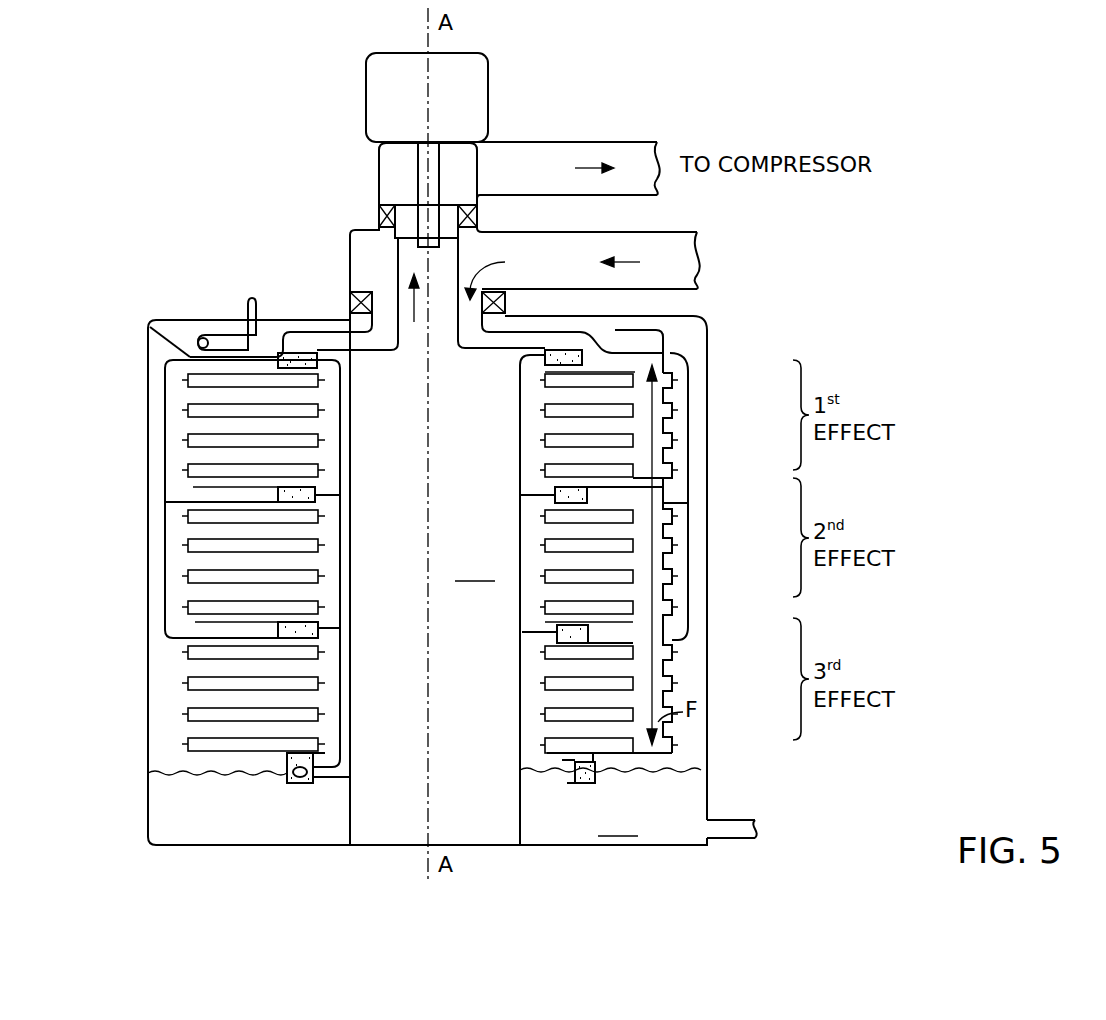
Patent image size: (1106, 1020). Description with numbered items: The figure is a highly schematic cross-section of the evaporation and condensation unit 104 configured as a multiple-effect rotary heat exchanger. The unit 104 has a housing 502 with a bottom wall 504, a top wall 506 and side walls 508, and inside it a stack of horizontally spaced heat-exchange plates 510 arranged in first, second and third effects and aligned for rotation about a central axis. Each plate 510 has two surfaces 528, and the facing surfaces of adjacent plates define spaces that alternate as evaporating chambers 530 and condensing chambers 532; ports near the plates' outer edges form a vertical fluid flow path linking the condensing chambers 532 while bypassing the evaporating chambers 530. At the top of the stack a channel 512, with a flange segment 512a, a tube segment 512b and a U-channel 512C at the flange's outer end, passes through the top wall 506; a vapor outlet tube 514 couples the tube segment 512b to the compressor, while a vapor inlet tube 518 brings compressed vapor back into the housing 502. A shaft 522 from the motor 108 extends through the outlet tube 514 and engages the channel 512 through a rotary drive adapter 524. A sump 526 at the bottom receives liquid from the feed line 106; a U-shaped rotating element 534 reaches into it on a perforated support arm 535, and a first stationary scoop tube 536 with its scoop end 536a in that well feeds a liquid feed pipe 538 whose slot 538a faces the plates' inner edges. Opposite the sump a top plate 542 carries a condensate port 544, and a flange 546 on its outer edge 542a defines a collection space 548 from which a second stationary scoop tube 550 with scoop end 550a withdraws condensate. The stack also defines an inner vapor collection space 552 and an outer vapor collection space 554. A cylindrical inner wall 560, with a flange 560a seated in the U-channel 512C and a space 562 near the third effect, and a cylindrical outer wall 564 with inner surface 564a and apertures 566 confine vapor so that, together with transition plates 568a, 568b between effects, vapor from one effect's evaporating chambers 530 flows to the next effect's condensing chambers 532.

The evaporation and condensation unit 104 is at (123, 243).
The feed line 106 is at (745, 808).
The motor 108 is at (488, 98).
The housing 502 is at (148, 370).
The bottom wall 504 is at (605, 847).
The top wall 506 is at (507, 318).
The side walls 508 is at (148, 617).
The heat-exchange plates 510 is at (202, 538).
The channel 512 is at (458, 247).
The flange segment 512a is at (490, 348).
The tube segment 512b is at (398, 280).
The U-channel 512C is at (268, 348).
The vapor outlet tube 514 is at (377, 181).
The vapor inlet tube 518 is at (623, 232).
The shaft 522 is at (440, 155).
The rotary drive adapter 524 is at (447, 205).
The sump 526 is at (424, 802).
The surfaces 528 is at (612, 398).
The evaporating chambers 530 is at (203, 392).
The condensing chambers 532 is at (188, 412).
The rotating element 534 is at (287, 777).
The perforated support arm 535 is at (595, 760).
The first stationary scoop tube 536 is at (338, 777).
The scoop end 536a is at (300, 785).
The liquid feed pipe 538 is at (350, 688).
The slot 538a is at (342, 590).
The top plate 542 is at (340, 338).
The outer edge 542a is at (153, 347).
The condensate port 544 is at (658, 353).
The flange 546 is at (643, 330).
The collection space 548 is at (652, 342).
The second stationary scoop tube 550 is at (249, 300).
The scoop end 550a is at (204, 338).
The inner vapor collection space 552 is at (476, 569).
The outer vapor collection space 554 is at (167, 660).
The inner wall 560 is at (520, 704).
The flange 560a is at (322, 362).
The space 562 is at (547, 745).
The outer wall 564 is at (165, 532).
The inner surface 564a is at (682, 573).
The apertures 566 is at (688, 485).
The transition plate 568a is at (303, 490).
The transition plate 568b is at (302, 503).